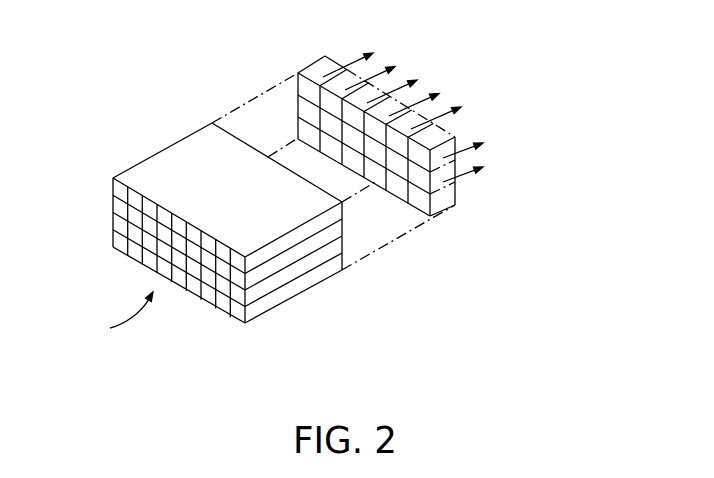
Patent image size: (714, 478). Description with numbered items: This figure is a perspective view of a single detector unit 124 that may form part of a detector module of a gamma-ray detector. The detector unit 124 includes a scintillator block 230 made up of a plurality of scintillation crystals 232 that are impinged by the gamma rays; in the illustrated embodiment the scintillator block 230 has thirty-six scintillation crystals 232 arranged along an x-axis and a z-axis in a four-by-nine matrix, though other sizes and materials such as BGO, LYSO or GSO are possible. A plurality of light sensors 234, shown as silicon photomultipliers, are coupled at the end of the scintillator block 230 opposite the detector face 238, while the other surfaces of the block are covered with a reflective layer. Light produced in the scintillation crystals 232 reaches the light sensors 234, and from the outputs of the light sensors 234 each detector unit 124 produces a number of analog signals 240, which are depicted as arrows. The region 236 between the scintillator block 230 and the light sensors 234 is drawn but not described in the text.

The detector unit 124 is at (530, 85).
The scintillator block 230 is at (162, 163).
The scintillation crystals 232 is at (212, 293).
The light sensors 234 is at (421, 178).
The substrate surface 236 is at (258, 108).
The detector face 238 is at (109, 316).
The analog signals 240 is at (489, 184).